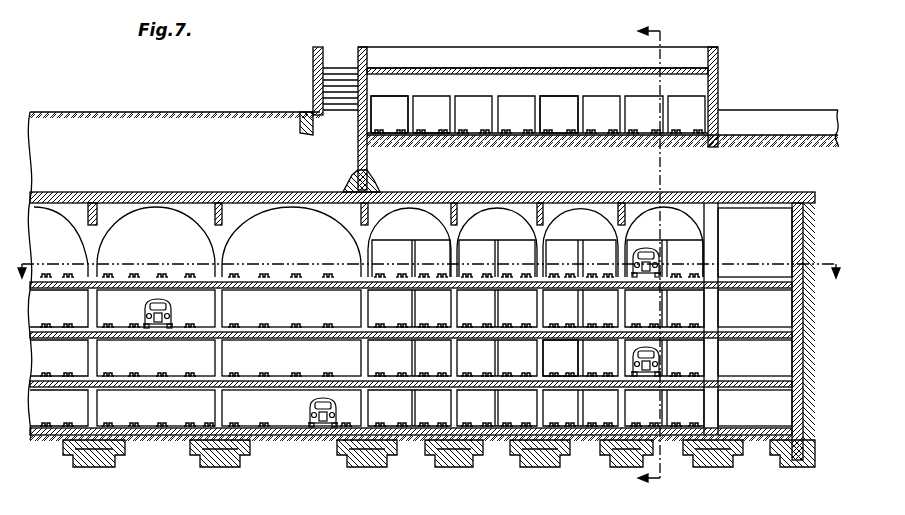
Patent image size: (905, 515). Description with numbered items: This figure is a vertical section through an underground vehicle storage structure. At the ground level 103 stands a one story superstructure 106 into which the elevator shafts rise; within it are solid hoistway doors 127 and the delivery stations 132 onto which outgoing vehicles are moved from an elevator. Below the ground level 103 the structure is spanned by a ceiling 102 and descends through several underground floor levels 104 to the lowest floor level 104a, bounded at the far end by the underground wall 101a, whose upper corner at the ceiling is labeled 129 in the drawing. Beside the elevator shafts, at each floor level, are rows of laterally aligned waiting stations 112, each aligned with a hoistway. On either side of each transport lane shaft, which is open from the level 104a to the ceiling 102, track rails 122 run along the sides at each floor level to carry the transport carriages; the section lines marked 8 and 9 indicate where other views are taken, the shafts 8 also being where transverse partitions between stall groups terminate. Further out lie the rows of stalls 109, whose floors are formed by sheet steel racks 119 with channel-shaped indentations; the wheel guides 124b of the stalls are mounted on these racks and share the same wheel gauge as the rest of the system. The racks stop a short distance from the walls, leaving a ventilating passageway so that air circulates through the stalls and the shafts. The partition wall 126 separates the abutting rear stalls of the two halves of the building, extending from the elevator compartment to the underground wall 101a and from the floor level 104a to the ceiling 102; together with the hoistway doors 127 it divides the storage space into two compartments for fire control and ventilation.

The underground wall 101a is at (812, 392).
The ceiling 102 is at (199, 197).
The ground level 103 is at (148, 112).
The underground floor levels 104 is at (752, 277).
The lowest floor level 104a is at (748, 431).
The one story superstructure 106 is at (548, 58).
The stalls 109 is at (300, 248).
The waiting stations 112 is at (431, 252).
The sheet steel racks 119 is at (157, 277).
The track rails 122 is at (262, 289).
The wheel guides 124b is at (205, 426).
The partition wall 126 is at (44, 232).
The hoistway doors 127 is at (401, 129).
The end wall 129 is at (762, 215).
The delivery stations 132 is at (440, 130).
The shafts 8 is at (649, 257).
The section line 9- 9 is at (428, 273).